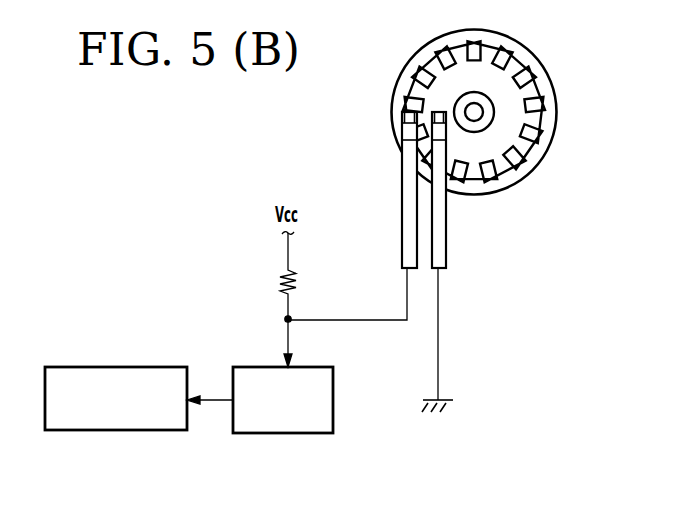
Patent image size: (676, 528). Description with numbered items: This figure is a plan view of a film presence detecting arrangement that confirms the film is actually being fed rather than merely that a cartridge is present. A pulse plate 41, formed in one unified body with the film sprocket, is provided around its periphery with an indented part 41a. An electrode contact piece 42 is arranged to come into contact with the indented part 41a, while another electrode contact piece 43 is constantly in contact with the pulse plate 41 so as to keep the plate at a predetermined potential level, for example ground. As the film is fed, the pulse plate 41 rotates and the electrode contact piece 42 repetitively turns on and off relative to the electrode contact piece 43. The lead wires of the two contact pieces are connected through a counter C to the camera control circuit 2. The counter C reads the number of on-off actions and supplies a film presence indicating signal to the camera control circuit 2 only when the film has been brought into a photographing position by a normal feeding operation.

The pulse plate 41 is at (496, 112).
The indented part 41a is at (541, 83).
The electrode contact piece 42 is at (401, 242).
The electrode contact piece 43 is at (446, 242).
The camera control circuit 2 is at (168, 432).
The counter C is at (313, 435).